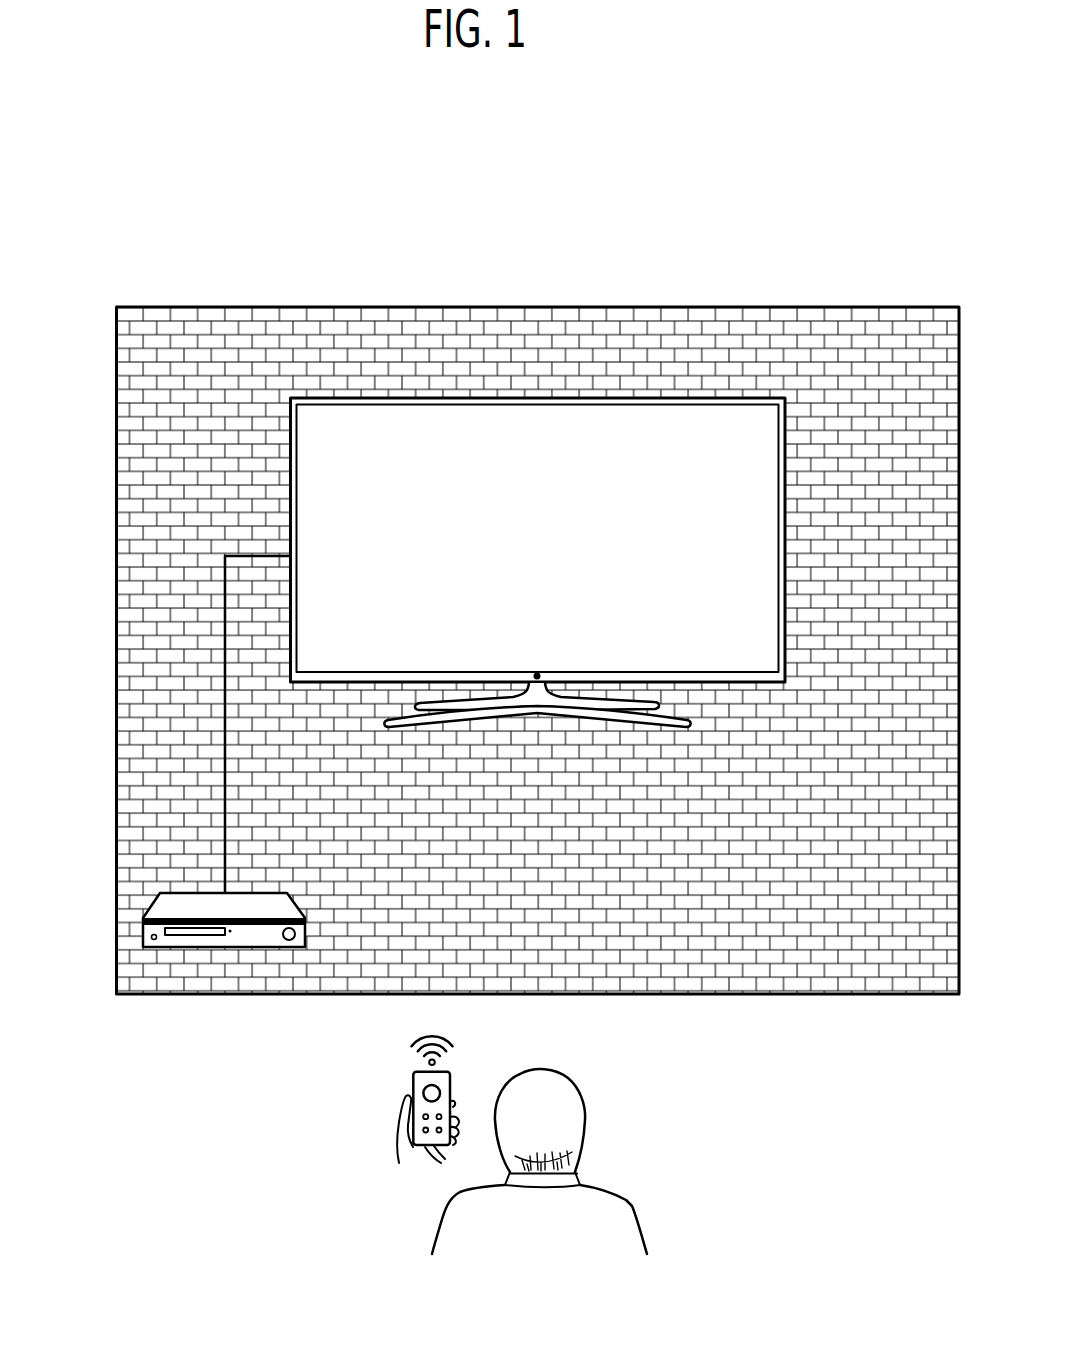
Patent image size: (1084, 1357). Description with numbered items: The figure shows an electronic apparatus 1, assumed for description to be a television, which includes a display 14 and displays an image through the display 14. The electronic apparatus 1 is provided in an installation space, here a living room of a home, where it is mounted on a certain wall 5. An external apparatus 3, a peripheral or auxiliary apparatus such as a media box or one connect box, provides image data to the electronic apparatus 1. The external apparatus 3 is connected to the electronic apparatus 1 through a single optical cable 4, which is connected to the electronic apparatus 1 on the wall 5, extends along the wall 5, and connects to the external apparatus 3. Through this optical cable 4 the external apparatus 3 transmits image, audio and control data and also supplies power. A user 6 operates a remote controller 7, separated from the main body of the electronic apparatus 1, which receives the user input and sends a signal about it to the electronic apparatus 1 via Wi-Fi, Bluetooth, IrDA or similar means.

The electronic apparatus 1 is at (527, 398).
The display 14 is at (688, 432).
The wall 5 is at (133, 507).
The optical cable 4 is at (222, 728).
The external apparatus 3 is at (152, 938).
The remote controller 7 is at (412, 1082).
The user 6 is at (632, 1202).